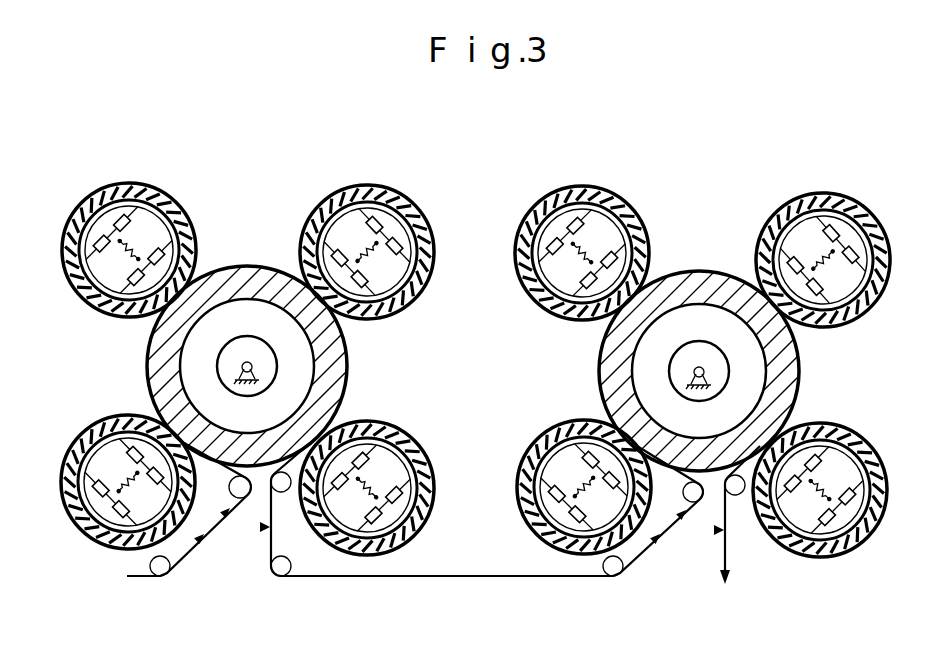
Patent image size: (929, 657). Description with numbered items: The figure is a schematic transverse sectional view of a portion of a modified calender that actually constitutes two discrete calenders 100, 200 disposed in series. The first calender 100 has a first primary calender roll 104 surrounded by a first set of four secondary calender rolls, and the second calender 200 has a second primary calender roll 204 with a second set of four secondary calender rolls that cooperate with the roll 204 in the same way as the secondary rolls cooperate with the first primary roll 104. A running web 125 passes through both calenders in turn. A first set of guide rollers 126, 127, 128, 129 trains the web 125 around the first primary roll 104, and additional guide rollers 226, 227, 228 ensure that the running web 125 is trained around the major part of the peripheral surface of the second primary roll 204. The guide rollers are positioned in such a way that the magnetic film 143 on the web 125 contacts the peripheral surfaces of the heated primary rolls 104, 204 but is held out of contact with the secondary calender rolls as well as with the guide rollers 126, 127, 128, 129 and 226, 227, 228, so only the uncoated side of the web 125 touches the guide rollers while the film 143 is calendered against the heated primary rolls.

The calender 100 is at (256, 171).
The first primary calender roll 104 is at (230, 268).
The web 125 is at (365, 578).
The guide roller 126 is at (160, 576).
The guide roller 127 is at (231, 490).
The guide roller 128 is at (281, 492).
The guide roller 129 is at (280, 576).
The magnetic film 143 is at (262, 527).
The calender 200 is at (722, 176).
The second primary calender roll 204 is at (675, 284).
The guide roller 226 is at (613, 576).
The guide roller 227 is at (693, 502).
The guide roller 228 is at (736, 495).